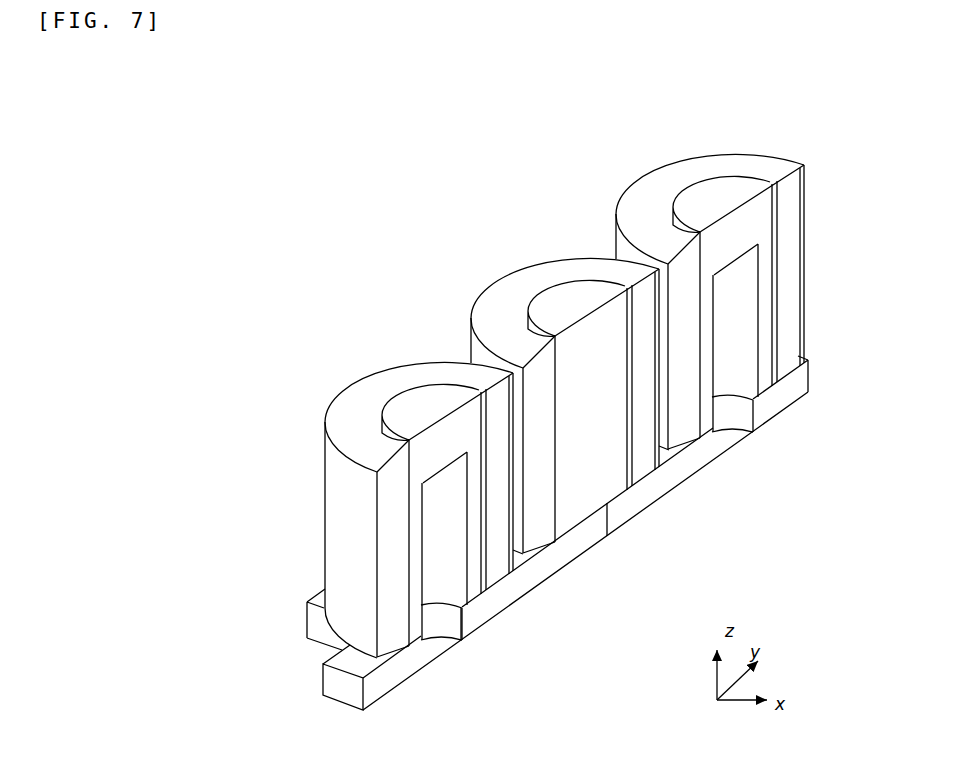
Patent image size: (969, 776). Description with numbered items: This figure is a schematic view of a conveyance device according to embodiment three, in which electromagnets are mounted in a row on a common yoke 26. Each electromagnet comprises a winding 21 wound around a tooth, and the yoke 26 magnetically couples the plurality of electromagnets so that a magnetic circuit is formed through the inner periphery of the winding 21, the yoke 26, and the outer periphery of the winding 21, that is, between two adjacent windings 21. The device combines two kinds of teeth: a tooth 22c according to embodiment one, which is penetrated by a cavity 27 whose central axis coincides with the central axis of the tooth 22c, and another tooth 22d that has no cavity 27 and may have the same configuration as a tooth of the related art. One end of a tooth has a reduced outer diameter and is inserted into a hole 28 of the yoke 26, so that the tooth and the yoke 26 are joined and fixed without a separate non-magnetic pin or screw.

The winding 21 is at (541, 409).
The tooth 22c is at (718, 196).
The another tooth 22d is at (575, 297).
The yoke 26 is at (397, 679).
The cavity 27 is at (741, 324).
The hole 28 is at (438, 645).